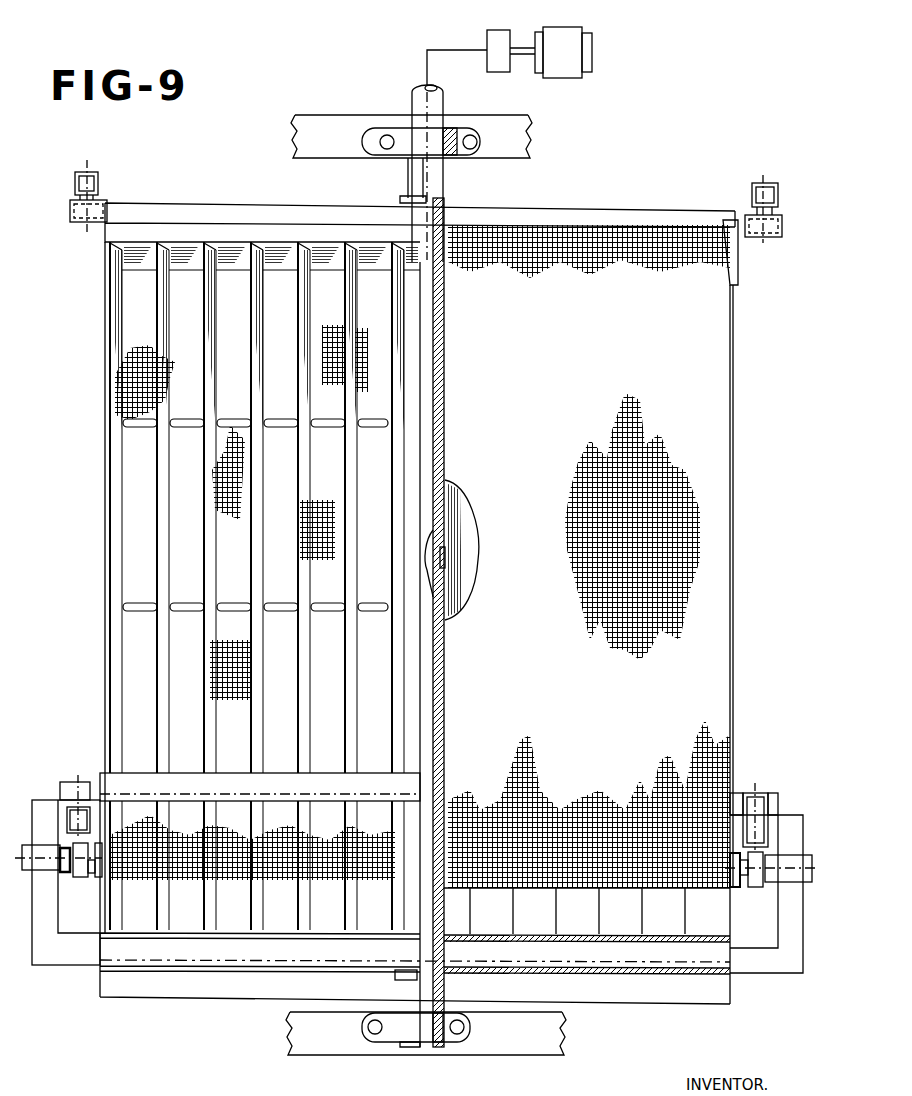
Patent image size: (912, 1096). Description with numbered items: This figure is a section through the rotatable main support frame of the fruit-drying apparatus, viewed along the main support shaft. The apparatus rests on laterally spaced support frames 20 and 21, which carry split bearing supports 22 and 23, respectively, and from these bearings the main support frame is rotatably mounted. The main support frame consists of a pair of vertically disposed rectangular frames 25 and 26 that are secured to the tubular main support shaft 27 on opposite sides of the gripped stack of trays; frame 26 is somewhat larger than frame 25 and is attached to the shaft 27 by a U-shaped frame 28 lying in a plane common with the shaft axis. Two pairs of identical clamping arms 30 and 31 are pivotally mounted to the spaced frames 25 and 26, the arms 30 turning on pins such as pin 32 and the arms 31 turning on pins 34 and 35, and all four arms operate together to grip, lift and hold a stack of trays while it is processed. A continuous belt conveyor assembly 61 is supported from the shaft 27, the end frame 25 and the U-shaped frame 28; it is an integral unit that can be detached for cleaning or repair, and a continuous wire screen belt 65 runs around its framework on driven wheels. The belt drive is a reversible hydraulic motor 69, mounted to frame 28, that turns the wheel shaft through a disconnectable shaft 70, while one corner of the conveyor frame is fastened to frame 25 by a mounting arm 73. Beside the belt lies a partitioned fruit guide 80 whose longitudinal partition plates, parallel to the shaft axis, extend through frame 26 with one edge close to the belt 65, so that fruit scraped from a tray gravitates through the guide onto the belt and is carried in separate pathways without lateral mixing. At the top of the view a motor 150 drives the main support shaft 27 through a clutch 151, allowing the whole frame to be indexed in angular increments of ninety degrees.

The motor 150 is at (590, 30).
The clutch 151 is at (490, 30).
The support frame 20 is at (292, 1046).
The support frame 21 is at (368, 85).
The split bearing support 22 is at (398, 1032).
The split bearing support 23 is at (405, 150).
The rectangular frame 25 is at (183, 202).
The rectangular frame 26 is at (113, 790).
The tubular main support shaft 27 is at (437, 346).
The U-shaped frame 28 is at (600, 995).
The clamping arm 30 is at (95, 185).
The clamping arm 31 is at (67, 818).
The pin 32 is at (80, 225).
The pin 34 is at (88, 784).
The pin 35 is at (757, 793).
The continuous belt conveyor assembly 61 is at (738, 526).
The continuous wire screen belt 65 is at (565, 424).
The reversible hydraulic motor 69 is at (48, 872).
The disconnectable shaft 70 is at (80, 876).
The mounting arm 73 is at (738, 265).
The partitioned fruit guide 80 is at (398, 470).